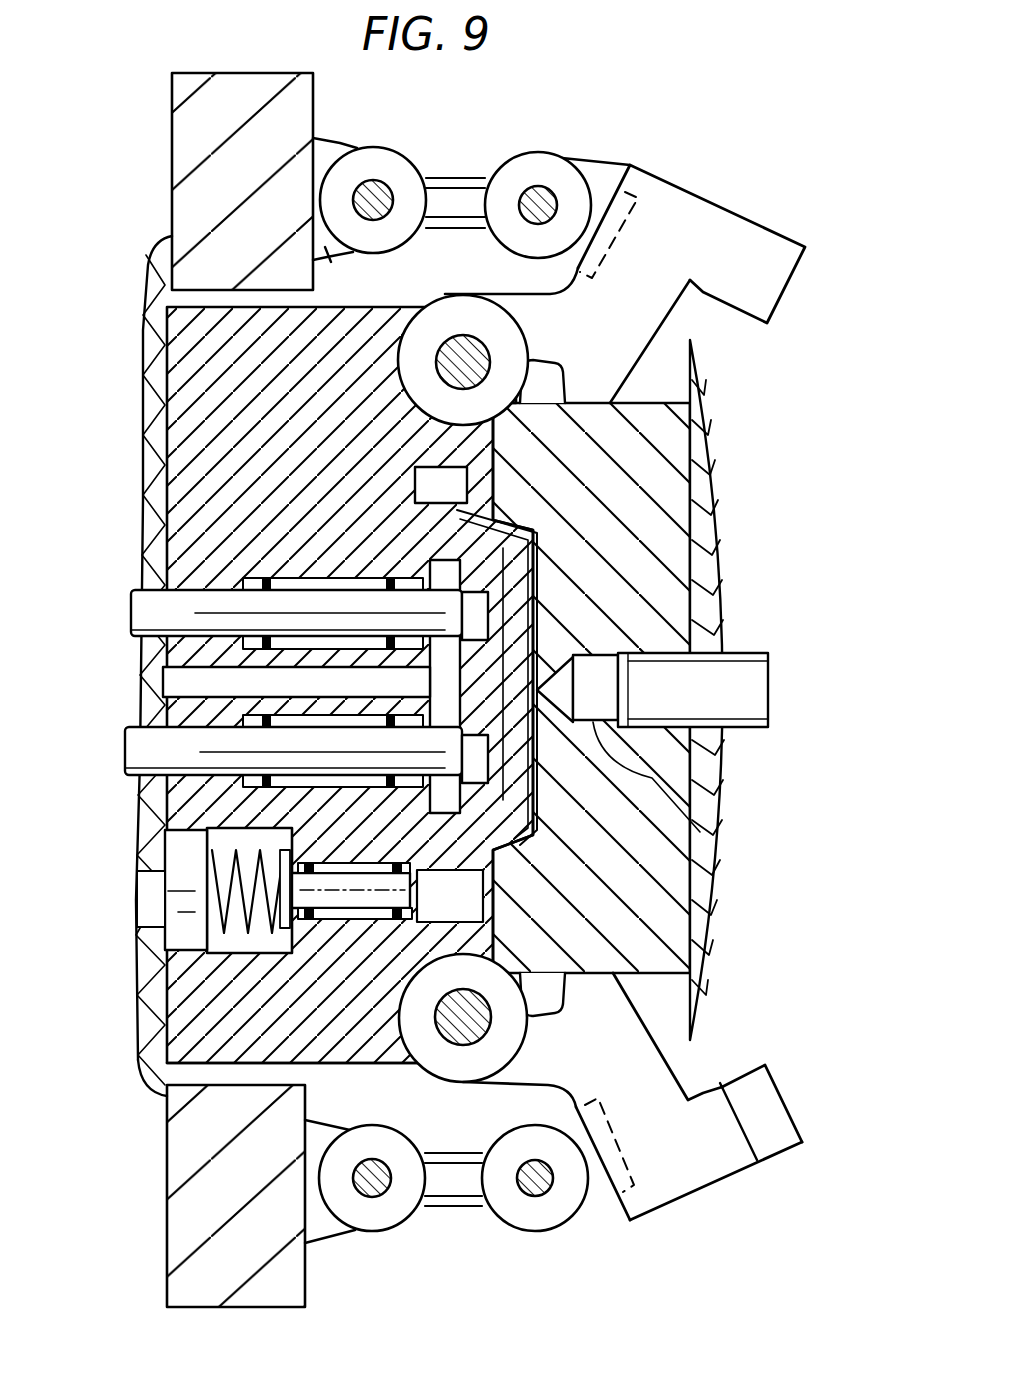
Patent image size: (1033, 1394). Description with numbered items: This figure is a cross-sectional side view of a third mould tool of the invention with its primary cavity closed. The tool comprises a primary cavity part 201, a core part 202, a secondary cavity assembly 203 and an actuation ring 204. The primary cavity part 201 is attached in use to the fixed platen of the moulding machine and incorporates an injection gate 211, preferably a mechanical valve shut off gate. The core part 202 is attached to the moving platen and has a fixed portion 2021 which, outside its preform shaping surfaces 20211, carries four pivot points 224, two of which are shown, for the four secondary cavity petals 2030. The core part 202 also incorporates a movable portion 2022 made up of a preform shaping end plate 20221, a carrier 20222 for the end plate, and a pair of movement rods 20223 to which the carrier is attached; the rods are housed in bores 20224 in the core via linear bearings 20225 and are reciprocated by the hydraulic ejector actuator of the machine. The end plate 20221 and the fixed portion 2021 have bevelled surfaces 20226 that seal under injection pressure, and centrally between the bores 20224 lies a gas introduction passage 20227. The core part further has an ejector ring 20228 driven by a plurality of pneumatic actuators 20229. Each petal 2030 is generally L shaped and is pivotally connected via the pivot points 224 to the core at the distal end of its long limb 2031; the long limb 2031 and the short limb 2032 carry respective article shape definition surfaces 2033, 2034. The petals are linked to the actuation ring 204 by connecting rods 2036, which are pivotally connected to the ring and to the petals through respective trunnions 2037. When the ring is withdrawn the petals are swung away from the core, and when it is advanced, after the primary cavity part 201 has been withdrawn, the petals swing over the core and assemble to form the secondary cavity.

The primary cavity part 201 is at (612, 582).
The core part 202 is at (400, 525).
The secondary cavity assembly 203 is at (800, 212).
The actuation ring 204 is at (263, 148).
The injection gate 211 is at (530, 742).
The pivot points 224 is at (458, 362).
The fixed portion 2021 is at (290, 1006).
The movable portion 2022 is at (540, 795).
The secondary cavity petals 2030 is at (672, 213).
The long limb 2031 is at (505, 1045).
The short limb 2032 is at (768, 1123).
The article shape definition surface 2033 is at (673, 1067).
The article shape definition surface 2034 is at (757, 1160).
The connecting rods 2036 is at (462, 190).
The trunnions 2037 is at (576, 258).
The preform shaping surfaces 20211 is at (415, 823).
The preform shaping end plate 20221 is at (547, 655).
The carrier 20222 is at (545, 845).
The movement rods 20223 is at (195, 612).
The bores 20224 is at (228, 578).
The linear bearings 20225 is at (428, 805).
The bevelled surfaces 20226 is at (515, 520).
The gas introduction passage 20227 is at (293, 687).
The ejector ring 20228 is at (262, 950).
The pneumatic actuators 20229 is at (185, 890).